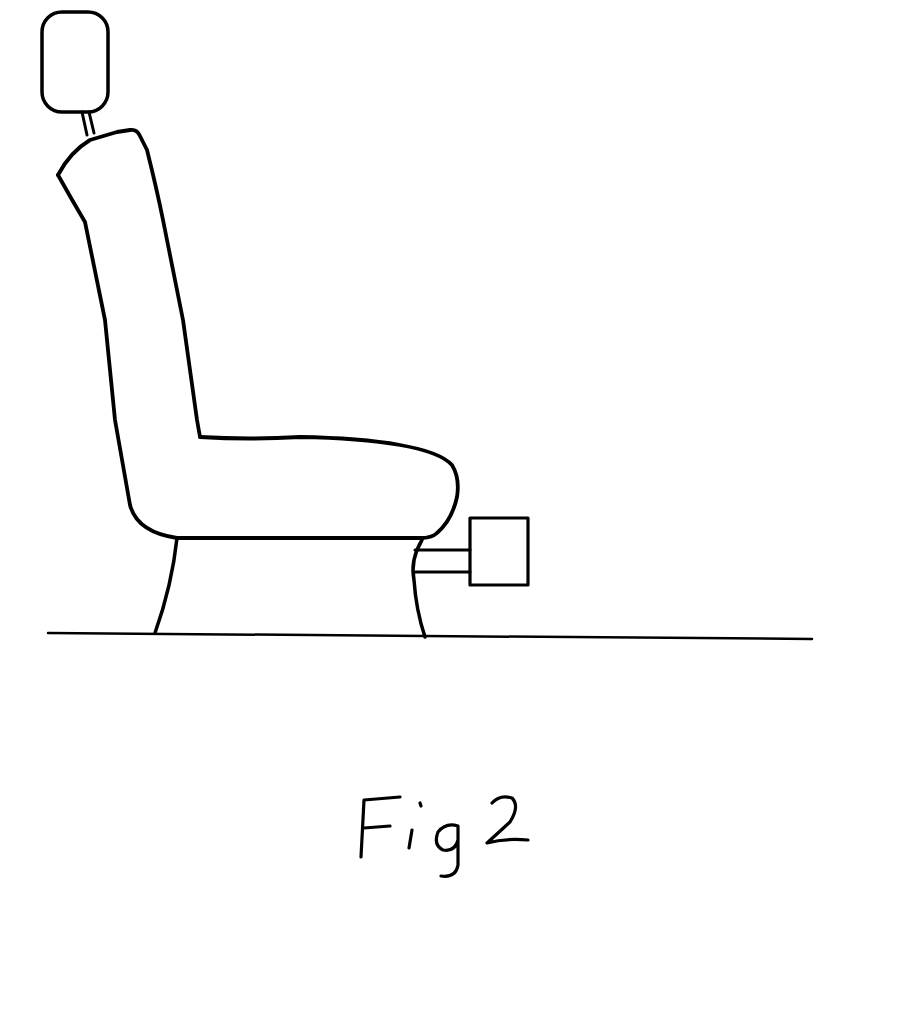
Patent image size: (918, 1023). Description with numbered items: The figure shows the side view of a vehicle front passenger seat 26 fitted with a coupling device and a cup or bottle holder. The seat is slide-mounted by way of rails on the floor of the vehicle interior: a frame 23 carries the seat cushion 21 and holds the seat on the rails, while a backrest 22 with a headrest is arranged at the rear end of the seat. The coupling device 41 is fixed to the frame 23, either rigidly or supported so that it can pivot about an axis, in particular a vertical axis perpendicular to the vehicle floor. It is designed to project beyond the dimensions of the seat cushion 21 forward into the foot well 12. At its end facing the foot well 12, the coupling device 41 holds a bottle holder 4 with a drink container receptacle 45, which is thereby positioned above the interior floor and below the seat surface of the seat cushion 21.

The front passenger seat 26 is at (255, 379).
The backrest 22 is at (140, 255).
The seat cushion 21 is at (298, 463).
The frame 23 is at (290, 600).
The foot well 12 is at (636, 548).
The bottle holder 4 is at (483, 539).
The coupling device 41 is at (443, 562).
The drink container receptacle 45 is at (507, 562).